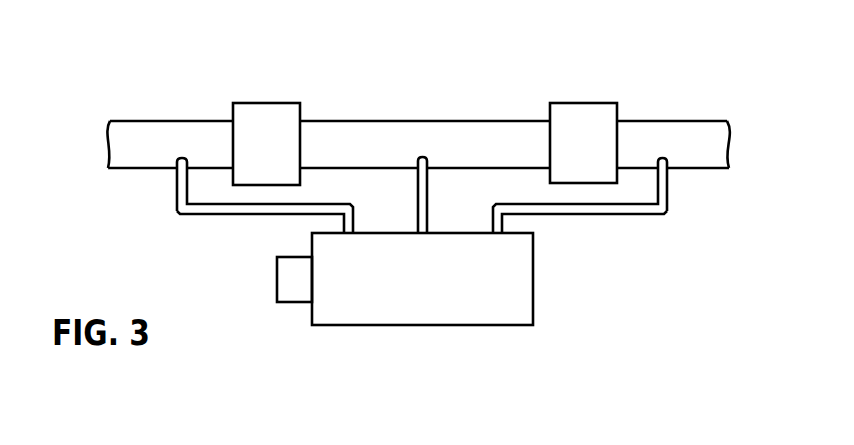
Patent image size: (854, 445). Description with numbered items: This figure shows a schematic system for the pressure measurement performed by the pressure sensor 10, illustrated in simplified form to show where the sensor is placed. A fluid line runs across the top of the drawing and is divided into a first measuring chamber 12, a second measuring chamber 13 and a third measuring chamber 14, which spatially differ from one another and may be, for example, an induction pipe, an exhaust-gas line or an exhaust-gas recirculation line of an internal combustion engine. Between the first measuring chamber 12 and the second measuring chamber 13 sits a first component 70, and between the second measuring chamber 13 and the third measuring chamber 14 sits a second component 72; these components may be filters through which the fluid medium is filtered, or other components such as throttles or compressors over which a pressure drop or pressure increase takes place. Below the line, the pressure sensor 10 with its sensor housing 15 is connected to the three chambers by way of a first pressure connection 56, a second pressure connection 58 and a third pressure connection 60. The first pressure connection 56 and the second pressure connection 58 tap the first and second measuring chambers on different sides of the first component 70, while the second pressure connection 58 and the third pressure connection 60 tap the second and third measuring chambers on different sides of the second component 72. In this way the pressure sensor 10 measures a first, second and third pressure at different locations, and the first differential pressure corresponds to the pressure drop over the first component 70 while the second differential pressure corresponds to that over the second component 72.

The pressure sensor 10 is at (556, 299).
The first measuring chamber 12 is at (168, 140).
The second measuring chamber 13 is at (421, 137).
The third measuring chamber 14 is at (683, 140).
The sensor housing 15 is at (500, 270).
The first pressure connection 56 is at (177, 188).
The second pressure connection 58 is at (428, 189).
The third pressure connection 60 is at (668, 185).
The first component 70 is at (263, 130).
The second component 72 is at (584, 130).